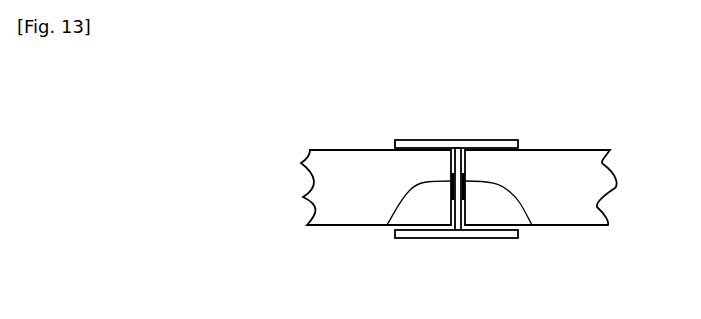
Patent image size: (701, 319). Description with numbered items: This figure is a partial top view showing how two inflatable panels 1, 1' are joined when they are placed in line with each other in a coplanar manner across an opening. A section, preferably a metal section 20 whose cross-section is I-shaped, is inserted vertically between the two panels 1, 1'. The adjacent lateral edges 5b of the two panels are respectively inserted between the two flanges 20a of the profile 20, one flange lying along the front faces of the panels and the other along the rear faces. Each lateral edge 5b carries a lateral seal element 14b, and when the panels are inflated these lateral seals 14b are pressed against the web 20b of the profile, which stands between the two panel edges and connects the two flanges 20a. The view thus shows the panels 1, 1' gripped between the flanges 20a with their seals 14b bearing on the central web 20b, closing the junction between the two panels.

The panel 1 is at (376, 160).
The panel 1' is at (541, 159).
The lateral edge 5b is at (448, 170).
The lateral seal element 14b is at (389, 222).
The metal section 20 is at (456, 183).
The flange 20a is at (433, 238).
The web 20b is at (460, 220).